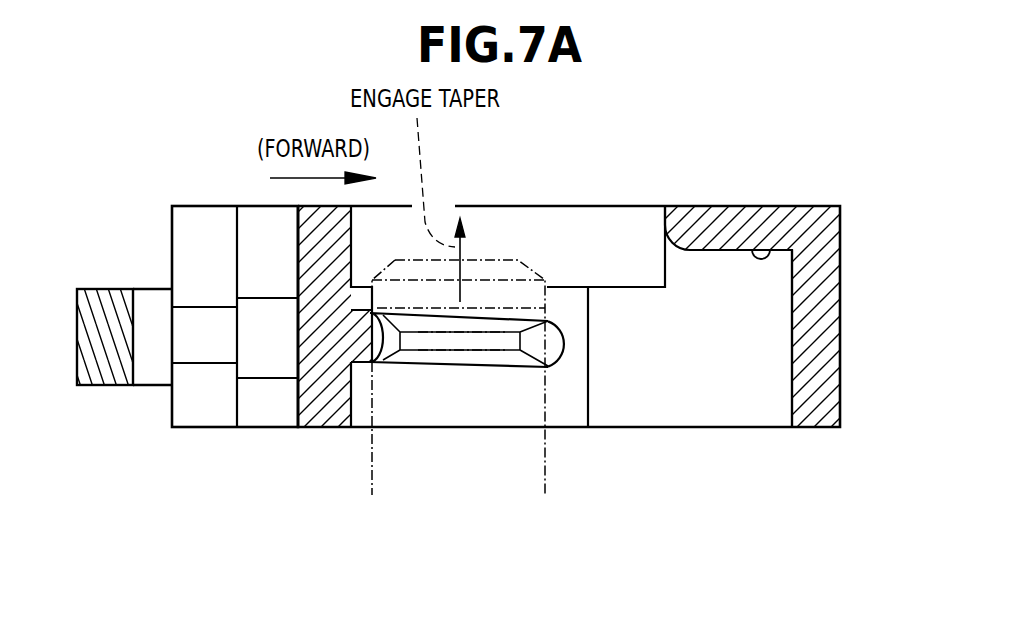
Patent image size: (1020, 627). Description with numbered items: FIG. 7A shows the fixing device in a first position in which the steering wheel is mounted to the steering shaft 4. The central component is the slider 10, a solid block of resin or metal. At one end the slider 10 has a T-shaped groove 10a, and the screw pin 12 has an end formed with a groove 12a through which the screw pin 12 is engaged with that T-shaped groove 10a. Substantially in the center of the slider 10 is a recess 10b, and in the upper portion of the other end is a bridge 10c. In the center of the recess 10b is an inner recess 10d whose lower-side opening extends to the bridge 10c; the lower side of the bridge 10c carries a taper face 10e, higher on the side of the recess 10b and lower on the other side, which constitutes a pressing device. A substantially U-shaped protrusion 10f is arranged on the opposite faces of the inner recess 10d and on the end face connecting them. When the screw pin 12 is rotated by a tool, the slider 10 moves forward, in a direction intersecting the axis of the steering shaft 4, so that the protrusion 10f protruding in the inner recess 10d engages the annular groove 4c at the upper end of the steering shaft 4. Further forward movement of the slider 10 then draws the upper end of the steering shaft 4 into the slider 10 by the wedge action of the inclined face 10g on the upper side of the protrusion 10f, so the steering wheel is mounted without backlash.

The slider 10 is at (842, 373).
The T-shaped groove 10a is at (253, 215).
The recess 10b is at (617, 287).
The bridge 10c is at (724, 208).
The inner recess 10d is at (677, 410).
The taper face 10e is at (767, 252).
The protrusion 10f is at (565, 353).
The inclined face 10g is at (512, 312).
The screw pin 12 is at (145, 358).
The groove 12a is at (200, 343).
The steering shaft 4 is at (370, 475).
The annular groove 4c is at (510, 336).